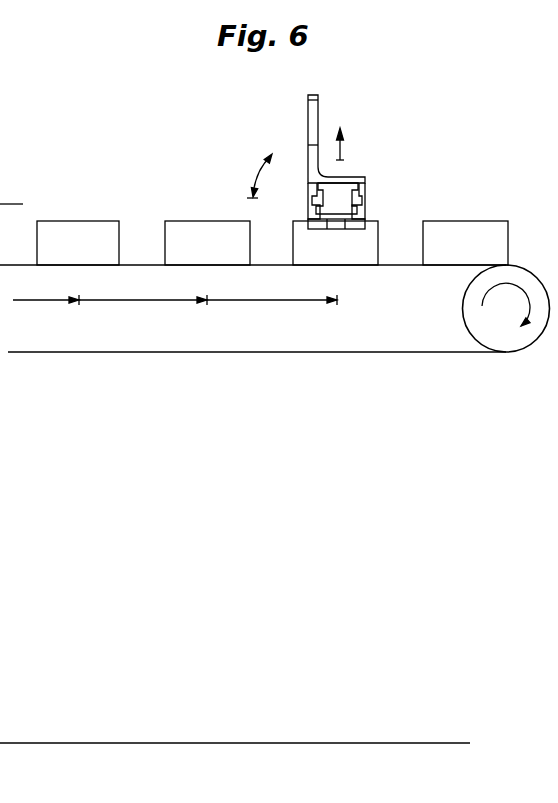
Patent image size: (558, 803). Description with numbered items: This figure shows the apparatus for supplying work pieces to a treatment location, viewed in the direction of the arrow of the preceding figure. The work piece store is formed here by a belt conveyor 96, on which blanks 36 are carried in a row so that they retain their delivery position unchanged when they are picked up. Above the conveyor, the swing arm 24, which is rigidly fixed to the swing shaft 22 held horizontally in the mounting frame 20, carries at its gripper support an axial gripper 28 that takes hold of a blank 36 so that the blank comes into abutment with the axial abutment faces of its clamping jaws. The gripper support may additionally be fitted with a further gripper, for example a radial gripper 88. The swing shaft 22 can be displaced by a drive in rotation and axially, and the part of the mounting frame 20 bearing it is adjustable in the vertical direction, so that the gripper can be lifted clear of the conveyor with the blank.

The mounting frame 20 is at (0, 437).
The swing shaft 22 is at (14, 162).
The swing arm 24 is at (349, 194).
The axial gripper 28 is at (364, 212).
The blanks 36 is at (302, 224).
The radial gripper 88 is at (324, 106).
The belt conveyor 96 is at (310, 358).